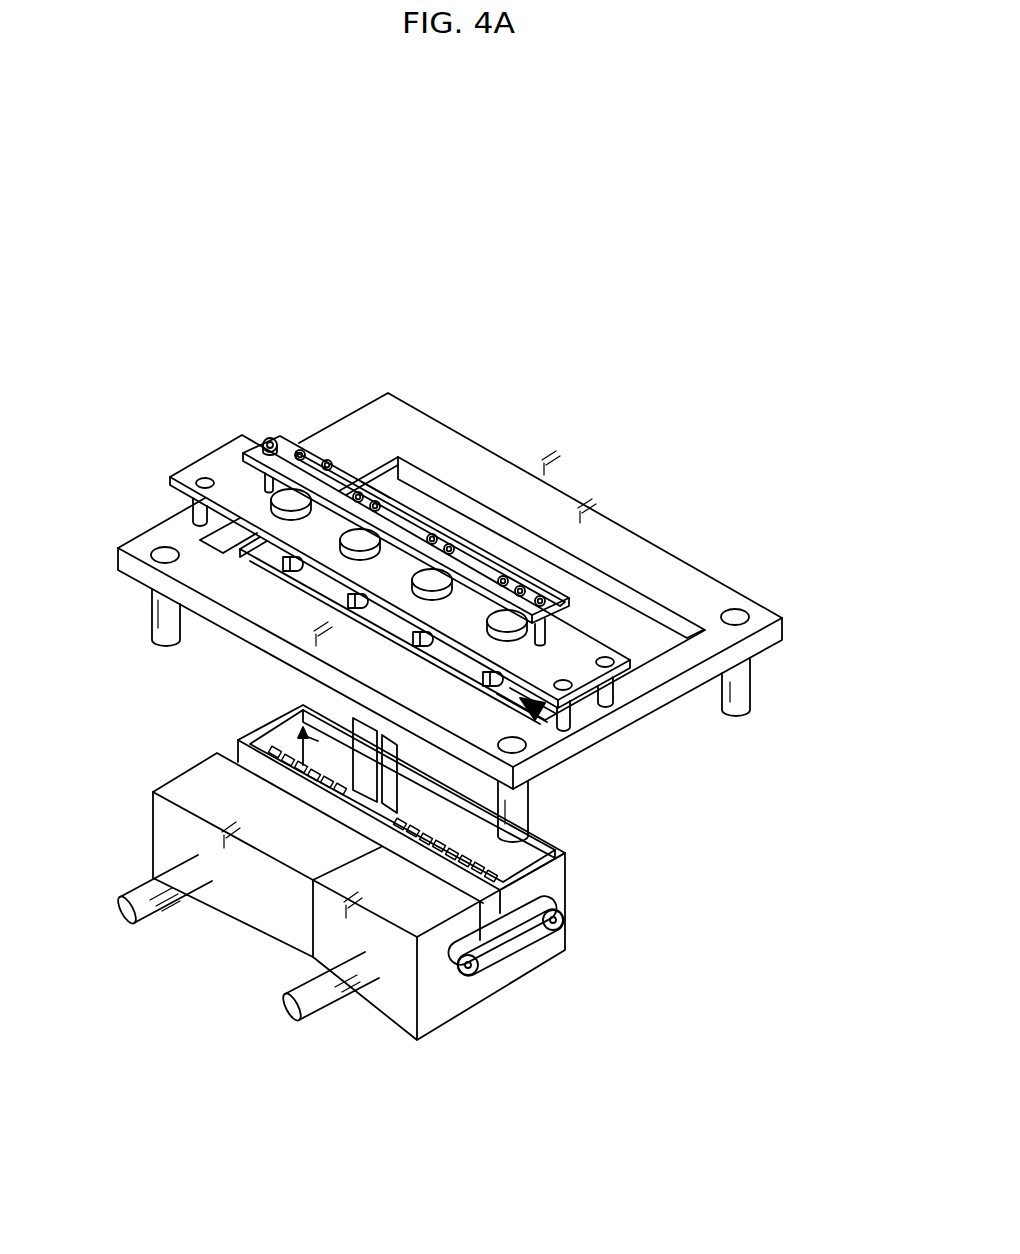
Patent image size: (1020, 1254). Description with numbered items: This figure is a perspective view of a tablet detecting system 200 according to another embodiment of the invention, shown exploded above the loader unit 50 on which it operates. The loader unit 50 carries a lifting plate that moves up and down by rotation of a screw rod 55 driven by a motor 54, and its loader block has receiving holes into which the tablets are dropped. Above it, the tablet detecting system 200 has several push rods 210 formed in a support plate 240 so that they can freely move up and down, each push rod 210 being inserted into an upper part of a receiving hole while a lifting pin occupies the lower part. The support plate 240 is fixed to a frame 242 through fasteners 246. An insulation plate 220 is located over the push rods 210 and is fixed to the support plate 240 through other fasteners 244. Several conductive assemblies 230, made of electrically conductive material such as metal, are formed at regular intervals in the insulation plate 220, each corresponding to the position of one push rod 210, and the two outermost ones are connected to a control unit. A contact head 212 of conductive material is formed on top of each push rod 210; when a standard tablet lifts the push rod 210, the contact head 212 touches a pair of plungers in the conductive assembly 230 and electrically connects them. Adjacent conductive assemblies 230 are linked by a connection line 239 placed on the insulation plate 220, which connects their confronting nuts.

The tablet detecting system 200 is at (661, 401).
The support plate 240 is at (216, 450).
The insulation plate 220 is at (287, 443).
The conductive assembly 230 is at (378, 492).
The connection line 239 is at (483, 560).
The frame 242 is at (178, 515).
The fastener 244 is at (545, 627).
The fastener 246 is at (610, 683).
The push rod 210 is at (295, 568).
The contact head 212 is at (360, 544).
The loader unit 50 is at (537, 718).
The motor 54 is at (400, 983).
The screw rod 55 is at (540, 866).